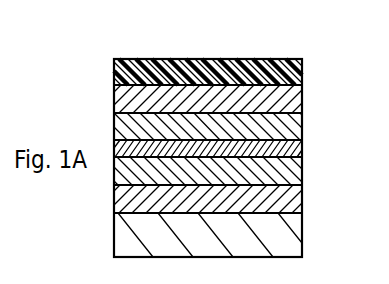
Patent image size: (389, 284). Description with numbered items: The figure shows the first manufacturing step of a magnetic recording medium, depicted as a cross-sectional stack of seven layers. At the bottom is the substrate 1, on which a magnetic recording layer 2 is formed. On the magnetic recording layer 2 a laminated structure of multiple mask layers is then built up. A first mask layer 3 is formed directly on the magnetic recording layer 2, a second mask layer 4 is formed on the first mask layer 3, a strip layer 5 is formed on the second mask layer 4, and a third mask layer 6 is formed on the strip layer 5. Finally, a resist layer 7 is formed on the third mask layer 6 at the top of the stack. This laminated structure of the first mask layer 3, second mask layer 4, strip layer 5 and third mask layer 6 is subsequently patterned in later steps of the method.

The substrate 1 is at (290, 237).
The magnetic recording layer 2 is at (292, 200).
The first mask layer 3 is at (293, 174).
The second mask layer 4 is at (300, 148).
The strip layer 5 is at (296, 125).
The third mask layer 6 is at (296, 98).
The resist layer 7 is at (288, 66).